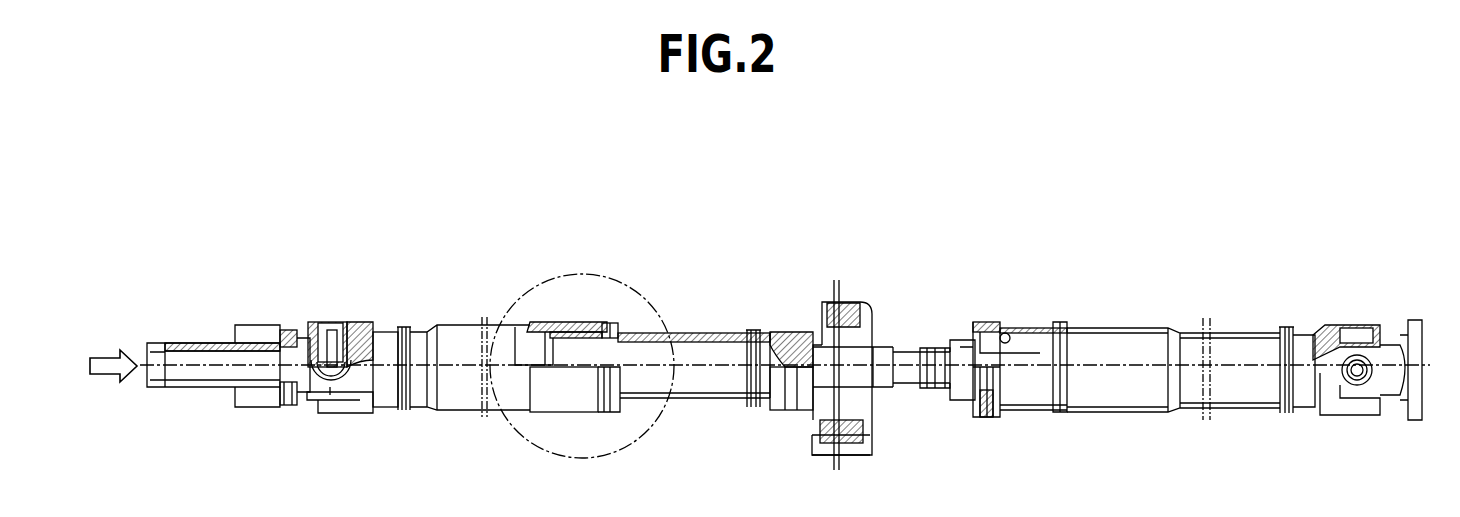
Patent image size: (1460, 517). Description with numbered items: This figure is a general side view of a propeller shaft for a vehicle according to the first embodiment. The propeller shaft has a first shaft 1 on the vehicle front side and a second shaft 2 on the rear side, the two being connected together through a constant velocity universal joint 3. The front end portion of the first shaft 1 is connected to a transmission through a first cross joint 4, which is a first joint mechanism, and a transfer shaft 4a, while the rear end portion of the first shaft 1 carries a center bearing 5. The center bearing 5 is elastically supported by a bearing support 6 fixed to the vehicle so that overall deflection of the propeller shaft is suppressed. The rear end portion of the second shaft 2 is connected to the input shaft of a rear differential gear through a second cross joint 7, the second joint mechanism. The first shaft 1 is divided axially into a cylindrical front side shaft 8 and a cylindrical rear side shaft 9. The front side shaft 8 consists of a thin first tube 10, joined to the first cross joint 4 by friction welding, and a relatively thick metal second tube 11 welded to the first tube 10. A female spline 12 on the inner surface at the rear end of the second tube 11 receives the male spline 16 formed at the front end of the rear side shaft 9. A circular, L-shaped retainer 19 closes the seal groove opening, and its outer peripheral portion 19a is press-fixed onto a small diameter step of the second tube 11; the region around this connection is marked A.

The first shaft 1 is at (492, 323).
The second shaft 2 is at (1072, 320).
The constant velocity universal joint 3 is at (991, 318).
The first cross joint 4 is at (333, 318).
The transfer shaft 4a is at (193, 340).
The center bearing 5 is at (873, 298).
The bearing support 6 is at (858, 300).
The second cross joint 7 is at (1357, 313).
The front side shaft 8 is at (560, 415).
The rear side shaft 9 is at (653, 400).
The first tube 10 is at (448, 398).
The second tube 11 is at (547, 398).
The female spline 12 is at (573, 322).
The male spline 16 is at (590, 343).
The retainer 19 is at (610, 400).
The outer peripheral portion 19a is at (612, 320).
The enlarged region A is at (607, 278).